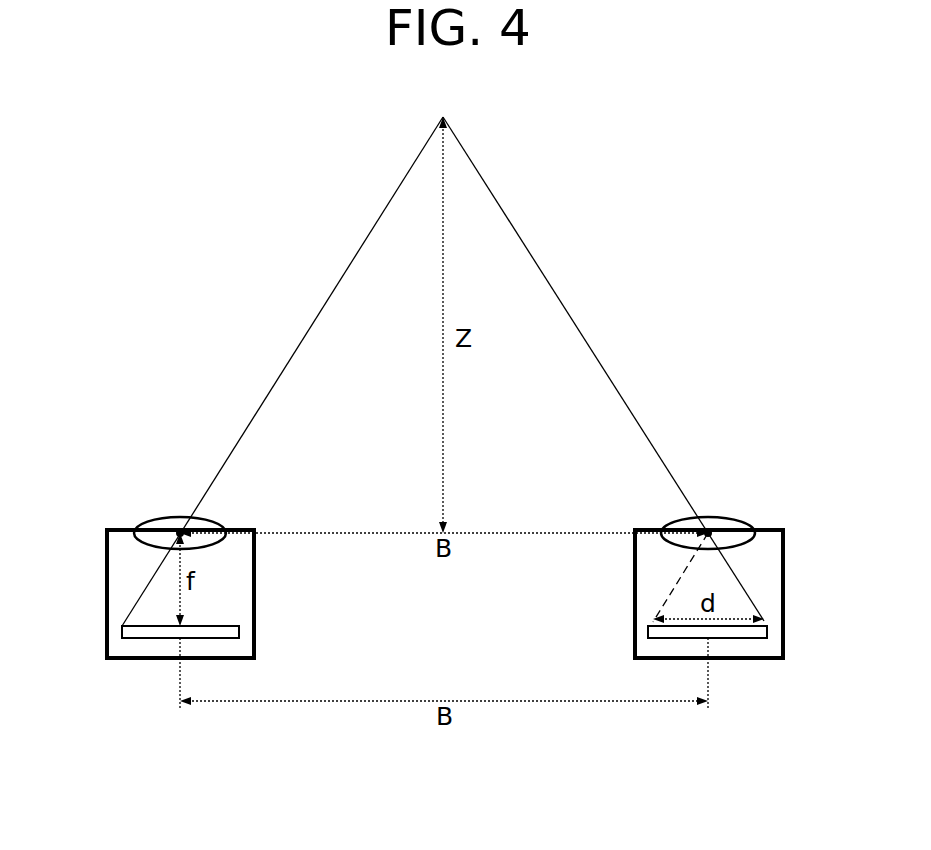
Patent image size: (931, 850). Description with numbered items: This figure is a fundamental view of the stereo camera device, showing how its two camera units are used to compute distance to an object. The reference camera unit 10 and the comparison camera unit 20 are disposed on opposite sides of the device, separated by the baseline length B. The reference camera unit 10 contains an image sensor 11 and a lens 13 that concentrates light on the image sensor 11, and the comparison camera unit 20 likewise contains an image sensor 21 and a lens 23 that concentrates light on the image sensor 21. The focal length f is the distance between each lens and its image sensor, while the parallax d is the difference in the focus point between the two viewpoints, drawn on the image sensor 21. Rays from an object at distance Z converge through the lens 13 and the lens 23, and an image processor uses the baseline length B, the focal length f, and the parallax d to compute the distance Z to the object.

The reference camera unit 10 is at (103, 578).
The image sensor 11 is at (149, 633).
The lens 13 is at (166, 519).
The comparison camera unit 20 is at (789, 576).
The image sensor 21 is at (743, 635).
The lens 23 is at (725, 519).